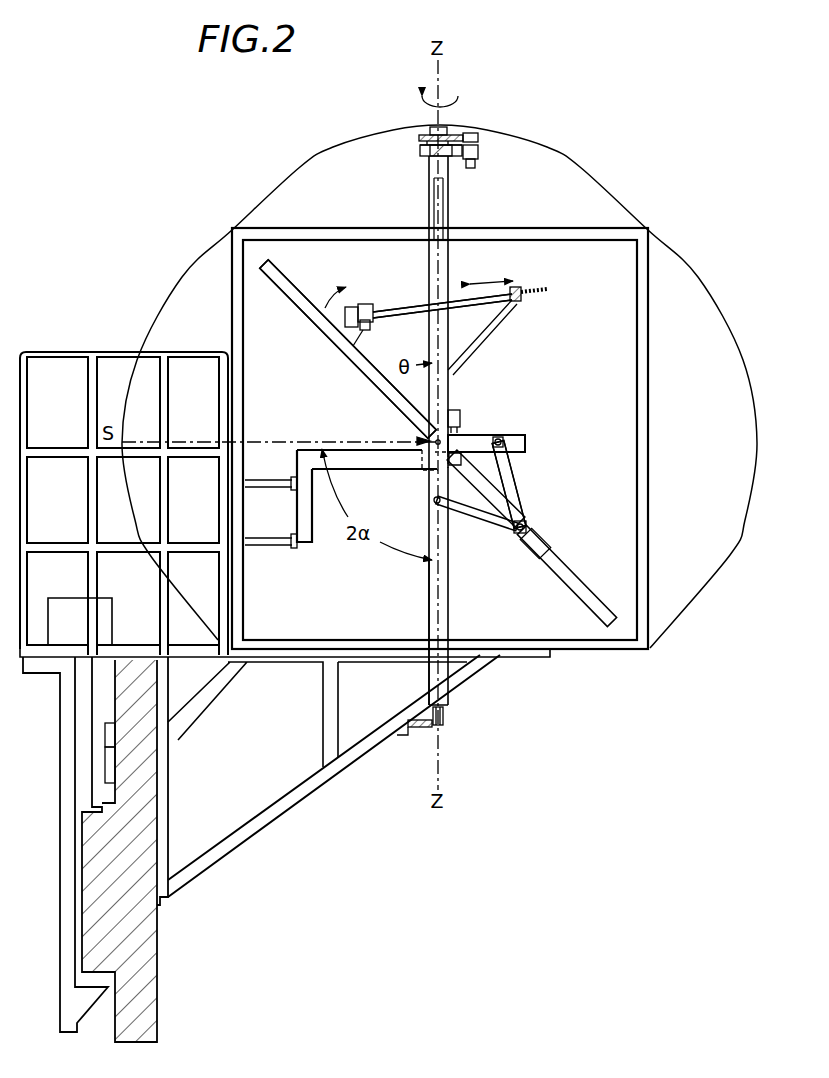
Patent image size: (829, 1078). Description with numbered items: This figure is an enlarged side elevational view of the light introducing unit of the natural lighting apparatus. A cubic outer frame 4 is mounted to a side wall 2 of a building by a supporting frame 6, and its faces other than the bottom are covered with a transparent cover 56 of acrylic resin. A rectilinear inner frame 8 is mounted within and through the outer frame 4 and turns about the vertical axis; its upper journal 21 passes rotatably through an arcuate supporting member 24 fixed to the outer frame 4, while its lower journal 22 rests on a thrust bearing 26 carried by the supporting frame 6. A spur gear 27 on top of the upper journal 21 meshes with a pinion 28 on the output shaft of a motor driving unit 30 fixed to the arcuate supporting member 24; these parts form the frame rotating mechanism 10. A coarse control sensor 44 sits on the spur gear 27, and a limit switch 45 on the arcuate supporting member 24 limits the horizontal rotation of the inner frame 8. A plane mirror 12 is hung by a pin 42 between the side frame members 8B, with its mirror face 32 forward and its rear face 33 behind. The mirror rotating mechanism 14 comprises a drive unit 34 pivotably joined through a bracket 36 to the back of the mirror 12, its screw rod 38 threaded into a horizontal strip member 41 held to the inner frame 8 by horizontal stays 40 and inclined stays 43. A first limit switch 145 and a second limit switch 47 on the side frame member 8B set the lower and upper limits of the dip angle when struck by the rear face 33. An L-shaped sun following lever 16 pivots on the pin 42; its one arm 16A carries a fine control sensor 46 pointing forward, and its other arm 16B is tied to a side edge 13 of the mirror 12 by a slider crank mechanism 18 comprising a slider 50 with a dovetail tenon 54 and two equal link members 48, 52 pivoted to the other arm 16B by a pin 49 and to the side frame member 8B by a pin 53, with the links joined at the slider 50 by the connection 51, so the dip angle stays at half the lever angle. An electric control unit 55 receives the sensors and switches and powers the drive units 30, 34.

The side wall 2 is at (158, 978).
The cubic outer frame 4 is at (588, 651).
The supporting frame 6 is at (293, 800).
The inner frame 8 is at (442, 592).
The side frame member 8B is at (441, 620).
The frame rotating mechanism 10 is at (474, 96).
The plane mirror 12 is at (368, 382).
The side edge 13 is at (573, 569).
The mirror rotating mechanism 14 is at (348, 268).
The sun following lever 16 is at (338, 452).
The one arm 16A is at (356, 468).
The other arm 16B is at (480, 432).
The slider crank mechanism 18 is at (532, 468).
The upper journal 21 is at (430, 165).
The lower journal 22 is at (446, 713).
The arcuate supporting member 24 is at (449, 148).
The thrust bearing 26 is at (425, 730).
The spur gear 27 is at (456, 135).
The pinion 28 is at (479, 138).
The driving unit 30 is at (479, 153).
The mirror face 32 is at (328, 334).
The rear face 33 is at (303, 296).
The drive unit 34 is at (370, 308).
The bracket 36 is at (368, 331).
The screw rod 38 is at (541, 285).
The horizontal stay 40 is at (462, 292).
The horizontal strip member 41 is at (520, 288).
The pin 42 is at (418, 439).
The inclined stay 43 is at (500, 322).
The coarse control sensor 44 is at (433, 127).
The limit switch 45 is at (420, 148).
The fine control sensor 46 is at (270, 479).
The second limit switch 47 is at (461, 415).
The link member 48 is at (518, 489).
The pin 49 is at (502, 437).
The slider 50 is at (524, 521).
The pin 51 is at (511, 529).
The link member 52 is at (478, 518).
The pin 53 is at (434, 508).
The dovetail tenon 54 is at (446, 487).
The control unit 55 is at (70, 598).
The transparent cover 56 is at (152, 330).
The first limit switch 145 is at (442, 314).